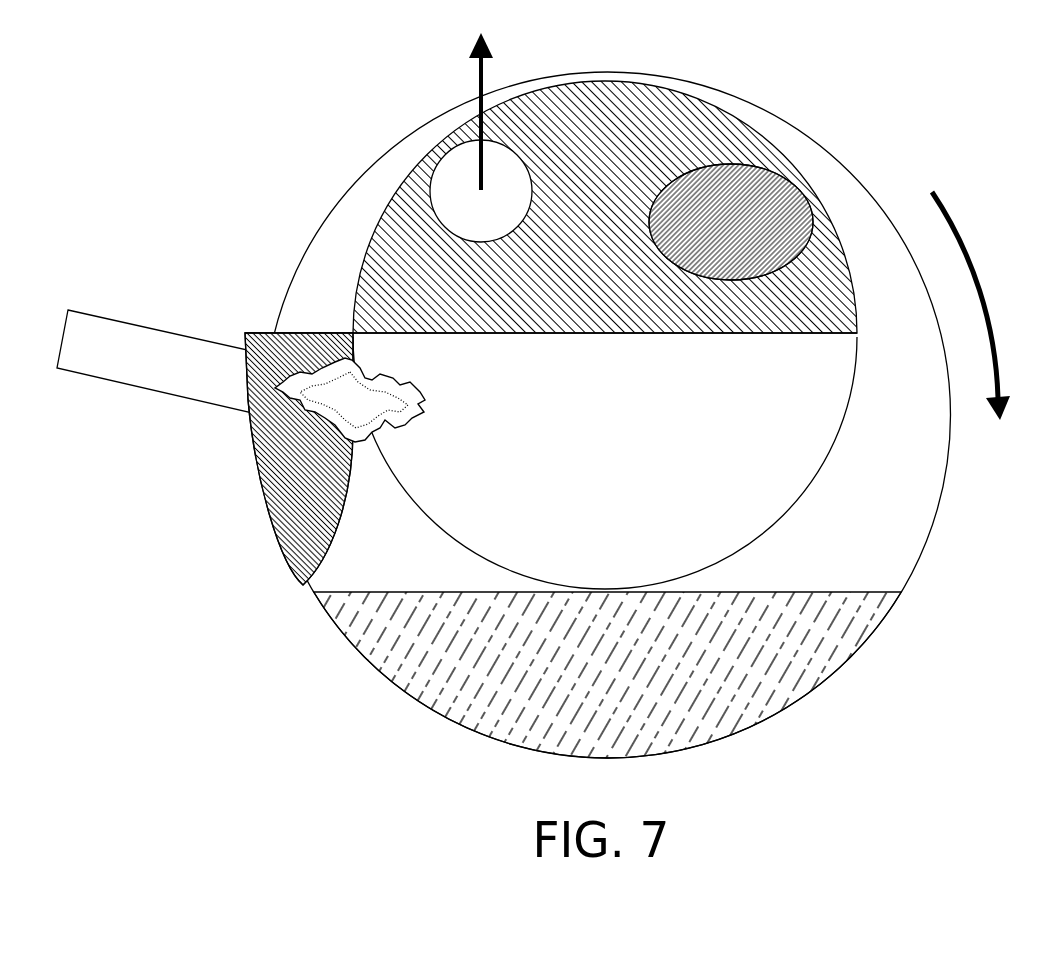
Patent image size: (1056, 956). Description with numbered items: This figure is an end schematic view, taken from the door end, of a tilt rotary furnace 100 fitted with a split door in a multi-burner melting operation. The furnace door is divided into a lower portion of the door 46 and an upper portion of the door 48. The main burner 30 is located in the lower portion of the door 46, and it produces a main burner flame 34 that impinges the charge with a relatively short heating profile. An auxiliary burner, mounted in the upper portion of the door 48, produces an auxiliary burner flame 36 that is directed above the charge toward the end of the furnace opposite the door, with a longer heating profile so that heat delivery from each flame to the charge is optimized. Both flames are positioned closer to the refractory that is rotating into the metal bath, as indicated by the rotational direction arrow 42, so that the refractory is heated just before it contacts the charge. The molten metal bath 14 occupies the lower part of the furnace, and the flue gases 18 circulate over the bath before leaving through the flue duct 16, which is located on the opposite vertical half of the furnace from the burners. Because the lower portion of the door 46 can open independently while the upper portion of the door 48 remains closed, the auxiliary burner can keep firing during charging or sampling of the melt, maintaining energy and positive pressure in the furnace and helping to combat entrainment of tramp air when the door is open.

The rotary furnace 100 is at (838, 124).
The molten metal bath 14 is at (591, 682).
The flue duct 16 is at (470, 224).
The flue gases 18 is at (477, 69).
The main burner 30 is at (126, 366).
The main burner flame 34 is at (413, 423).
The auxiliary burner flame 36 is at (720, 232).
The rotational direction arrow 42 is at (963, 250).
The lower portion of the door 46 is at (252, 491).
The upper portion of the door 48 is at (361, 268).